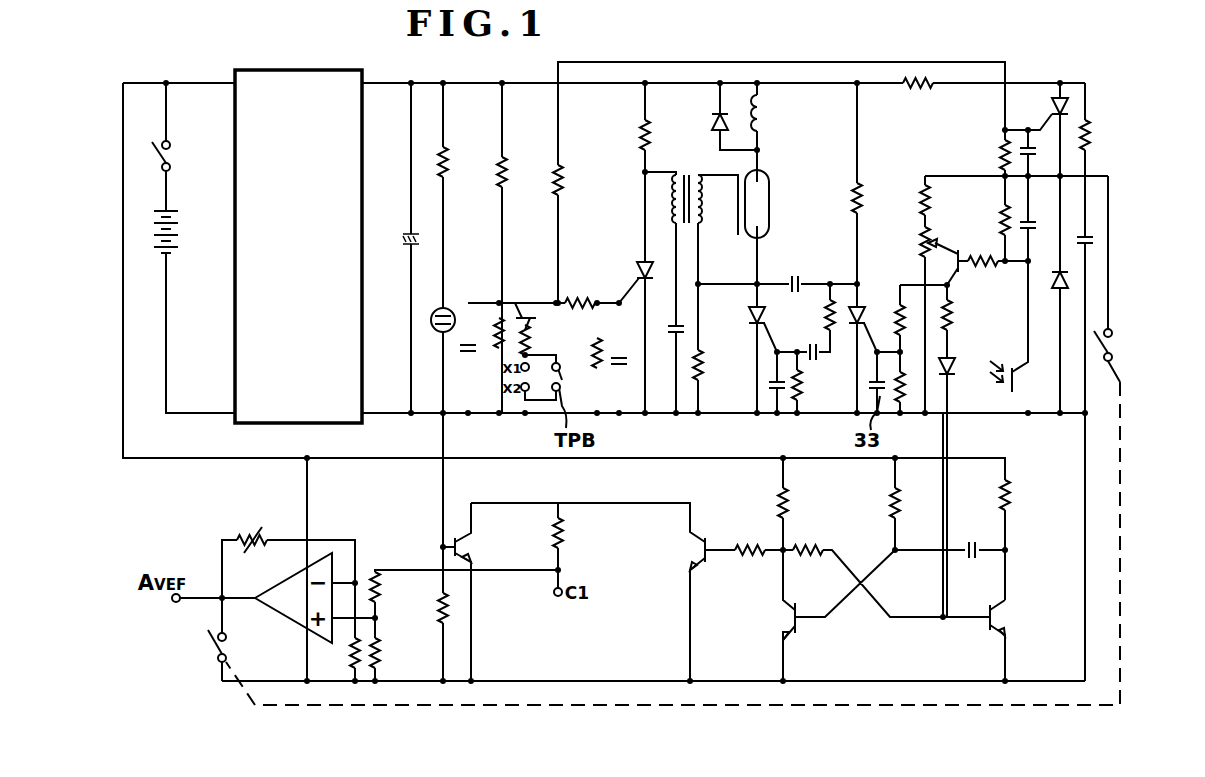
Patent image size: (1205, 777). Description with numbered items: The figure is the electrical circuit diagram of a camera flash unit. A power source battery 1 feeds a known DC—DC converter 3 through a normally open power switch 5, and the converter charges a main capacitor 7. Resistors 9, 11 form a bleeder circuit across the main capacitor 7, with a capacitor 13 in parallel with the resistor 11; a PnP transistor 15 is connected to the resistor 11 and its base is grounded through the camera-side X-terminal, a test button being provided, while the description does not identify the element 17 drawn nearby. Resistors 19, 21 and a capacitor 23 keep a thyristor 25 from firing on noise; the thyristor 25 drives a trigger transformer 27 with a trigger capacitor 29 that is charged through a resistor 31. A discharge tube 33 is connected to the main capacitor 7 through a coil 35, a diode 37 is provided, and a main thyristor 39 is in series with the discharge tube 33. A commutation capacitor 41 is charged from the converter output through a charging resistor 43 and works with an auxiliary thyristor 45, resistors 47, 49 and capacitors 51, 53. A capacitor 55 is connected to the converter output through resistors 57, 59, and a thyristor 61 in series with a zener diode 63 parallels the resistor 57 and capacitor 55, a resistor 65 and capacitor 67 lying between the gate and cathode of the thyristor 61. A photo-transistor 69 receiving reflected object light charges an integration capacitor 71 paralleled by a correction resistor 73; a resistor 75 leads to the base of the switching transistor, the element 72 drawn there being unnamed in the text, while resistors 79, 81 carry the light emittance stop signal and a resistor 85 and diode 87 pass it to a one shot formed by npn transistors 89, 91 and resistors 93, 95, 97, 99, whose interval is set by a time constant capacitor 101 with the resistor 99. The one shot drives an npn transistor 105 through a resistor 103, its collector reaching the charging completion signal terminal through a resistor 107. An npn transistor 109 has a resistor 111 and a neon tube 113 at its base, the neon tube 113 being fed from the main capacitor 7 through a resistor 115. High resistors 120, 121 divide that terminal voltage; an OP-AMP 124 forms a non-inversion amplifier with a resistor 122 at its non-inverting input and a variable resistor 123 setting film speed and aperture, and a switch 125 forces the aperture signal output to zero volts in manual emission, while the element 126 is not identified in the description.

The power source battery 1 is at (180, 232).
The DC-DC converter 3 is at (288, 70).
The power switch 5 is at (171, 158).
The main capacitor 7 is at (402, 237).
The resistor 9 is at (507, 172).
The resistor 11 is at (495, 340).
The capacitor 13 is at (463, 358).
The PnP transistor 15 is at (528, 301).
The resistor 17 is at (530, 335).
The resistor 19 is at (579, 295).
The resistor 21 is at (592, 348).
The capacitor 23 is at (623, 372).
The thyristor 25 is at (636, 266).
The trigger transformer 27 is at (670, 205).
The trigger capacitor 29 is at (672, 340).
The resistor 31 is at (640, 136).
The discharge tube 33 is at (771, 204).
The coil 35 is at (764, 115).
The diode 37 is at (712, 122).
The main thyristor 39 is at (750, 319).
The commutation capacitor 41 is at (795, 276).
The charging resistor 43 is at (864, 203).
The auxiliary thyristor 45 is at (866, 311).
The resistor 47 is at (826, 318).
The resistor 49 is at (801, 394).
The capacitor 51 is at (816, 357).
The capacitor 53 is at (768, 384).
The capacitor 55 is at (1094, 240).
The resistor 57 is at (1090, 140).
The resistor 59 is at (916, 86).
The thyristor 61 is at (1052, 104).
The zener diode 63 is at (1070, 283).
The resistor 65 is at (998, 156).
The capacitor 67 is at (1038, 150).
The photo-transistor 69 is at (1022, 375).
The integration capacitor 71 is at (1033, 228).
The transistor 72 is at (961, 246).
The correction resistor 73 is at (999, 218).
The resistor 75 is at (986, 268).
The resistor 79 is at (908, 300).
The resistor 81 is at (904, 404).
The resistor 85 is at (952, 316).
The diode 87 is at (955, 376).
The npn transistor 89 is at (1006, 619).
The npn transistor 91 is at (784, 616).
The resistor 93 is at (1014, 494).
The resistor 95 is at (790, 501).
The resistor 97 is at (807, 556).
The resistor 99 is at (900, 506).
The time constant capacitor 101 is at (973, 540).
The resistor 103 is at (748, 559).
The npn transistor 105 is at (699, 549).
The resistor 107 is at (563, 536).
The npn transistor 109 is at (458, 549).
The resistor 111 is at (446, 607).
The neon tube 113 is at (449, 313).
The resistor 115 is at (446, 159).
The high resistor 120 is at (377, 576).
The high resistor 121 is at (378, 650).
The resistor 122 is at (358, 649).
The variable resistor 123 is at (251, 532).
The operation amplifier 124 is at (284, 613).
The switch 125 is at (208, 644).
The switch 126 is at (1114, 344).